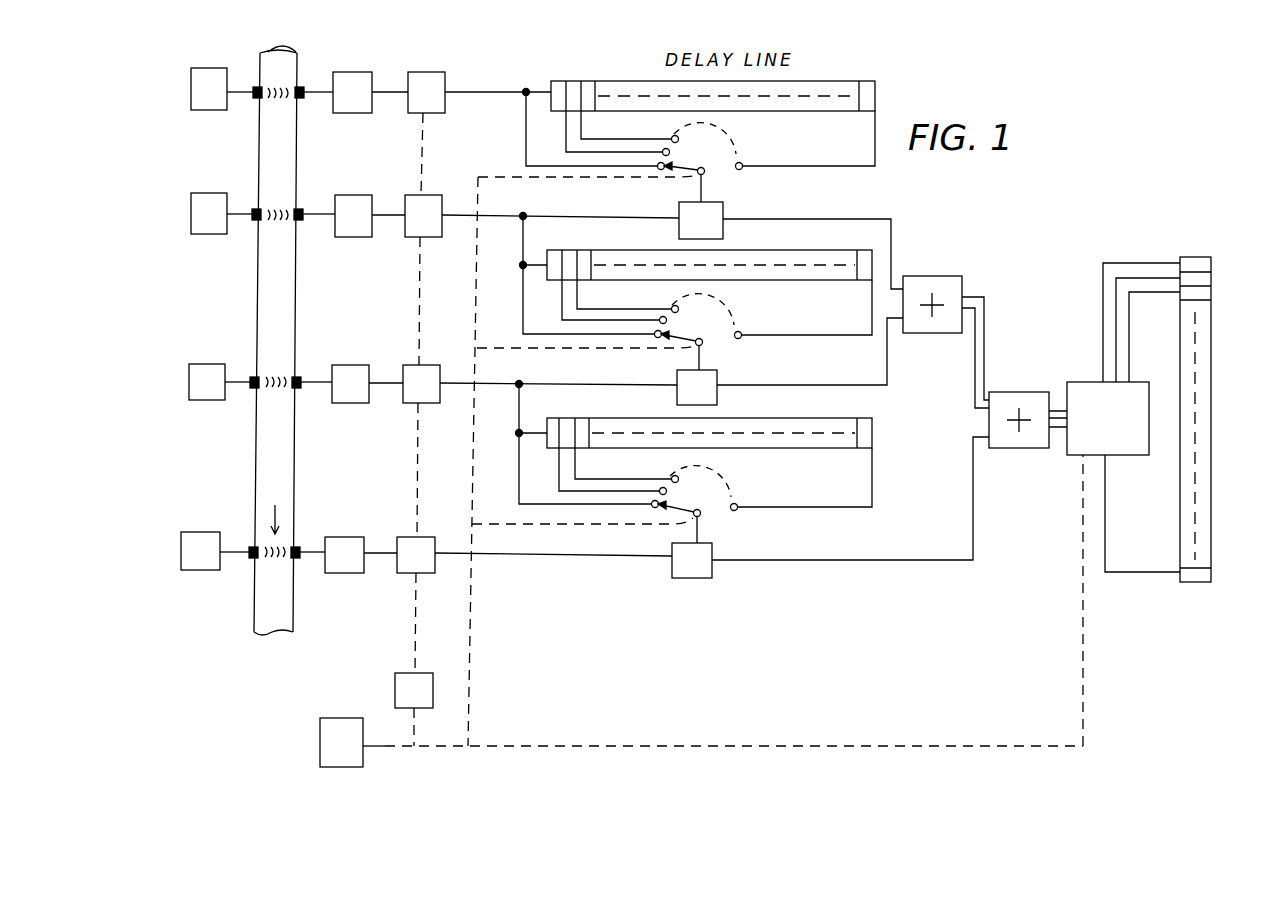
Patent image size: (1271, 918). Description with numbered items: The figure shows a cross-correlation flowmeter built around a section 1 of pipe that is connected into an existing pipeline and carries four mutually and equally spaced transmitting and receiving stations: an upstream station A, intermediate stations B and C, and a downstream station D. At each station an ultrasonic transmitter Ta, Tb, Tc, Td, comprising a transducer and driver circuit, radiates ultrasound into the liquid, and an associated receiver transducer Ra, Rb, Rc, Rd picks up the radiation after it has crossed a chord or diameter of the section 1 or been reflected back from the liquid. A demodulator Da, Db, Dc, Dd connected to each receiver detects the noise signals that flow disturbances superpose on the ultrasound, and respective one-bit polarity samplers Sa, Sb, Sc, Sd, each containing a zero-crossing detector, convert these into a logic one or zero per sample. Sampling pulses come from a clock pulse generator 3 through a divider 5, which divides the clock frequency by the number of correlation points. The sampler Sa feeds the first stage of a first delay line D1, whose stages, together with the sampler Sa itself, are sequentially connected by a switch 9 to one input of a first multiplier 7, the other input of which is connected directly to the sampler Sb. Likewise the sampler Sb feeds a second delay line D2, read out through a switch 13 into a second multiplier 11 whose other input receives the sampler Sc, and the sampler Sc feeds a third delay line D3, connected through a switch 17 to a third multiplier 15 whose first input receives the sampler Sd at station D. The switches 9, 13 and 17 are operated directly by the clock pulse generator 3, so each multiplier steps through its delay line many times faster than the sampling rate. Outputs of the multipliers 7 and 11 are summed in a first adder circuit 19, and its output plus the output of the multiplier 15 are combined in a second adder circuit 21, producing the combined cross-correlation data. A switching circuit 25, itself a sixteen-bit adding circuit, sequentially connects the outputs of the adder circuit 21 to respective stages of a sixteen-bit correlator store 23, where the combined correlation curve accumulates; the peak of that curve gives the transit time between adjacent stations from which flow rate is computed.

The pipe section 1 is at (292, 68).
The clock pulse generator 3 is at (320, 738).
The divider 5 is at (395, 683).
The first multiplier 7 is at (713, 214).
The switch 9 is at (722, 156).
The second multiplier 11 is at (706, 383).
The switch 13 is at (718, 326).
The third multiplier 15 is at (705, 571).
The switch 17 is at (713, 492).
The first adder circuit 19 is at (922, 276).
The second adder circuit 21 is at (1012, 392).
The correlator store 23 is at (1203, 430).
The switching circuit 25 is at (1122, 430).
The first delay line D1 is at (810, 100).
The second delay line D2 is at (812, 270).
The third delay line D3 is at (812, 438).
The ultrasonic transmitter Ta is at (251, 109).
The ultrasonic transmitter Tb is at (249, 235).
The ultrasonic transmitter Tc is at (247, 402).
The ultrasonic transmitter Td is at (242, 572).
The receiver transducer Ra is at (311, 103).
The receiver transducer Rb is at (309, 224).
The receiver transducer Rc is at (308, 392).
The receiver transducer Rd is at (307, 565).
The demodulator Da is at (362, 113).
The demodulator Db is at (352, 237).
The demodulator Dc is at (362, 404).
The demodulator Dd is at (352, 573).
The one-bit polarity sampler Sa is at (435, 113).
The one-bit polarity sampler Sb is at (432, 237).
The one-bit polarity sampler Sc is at (432, 404).
The one-bit polarity sampler Sd is at (430, 573).
The upstream station A is at (243, 65).
The intermediate station B is at (244, 190).
The intermediate station C is at (241, 350).
The downstream station D is at (239, 525).